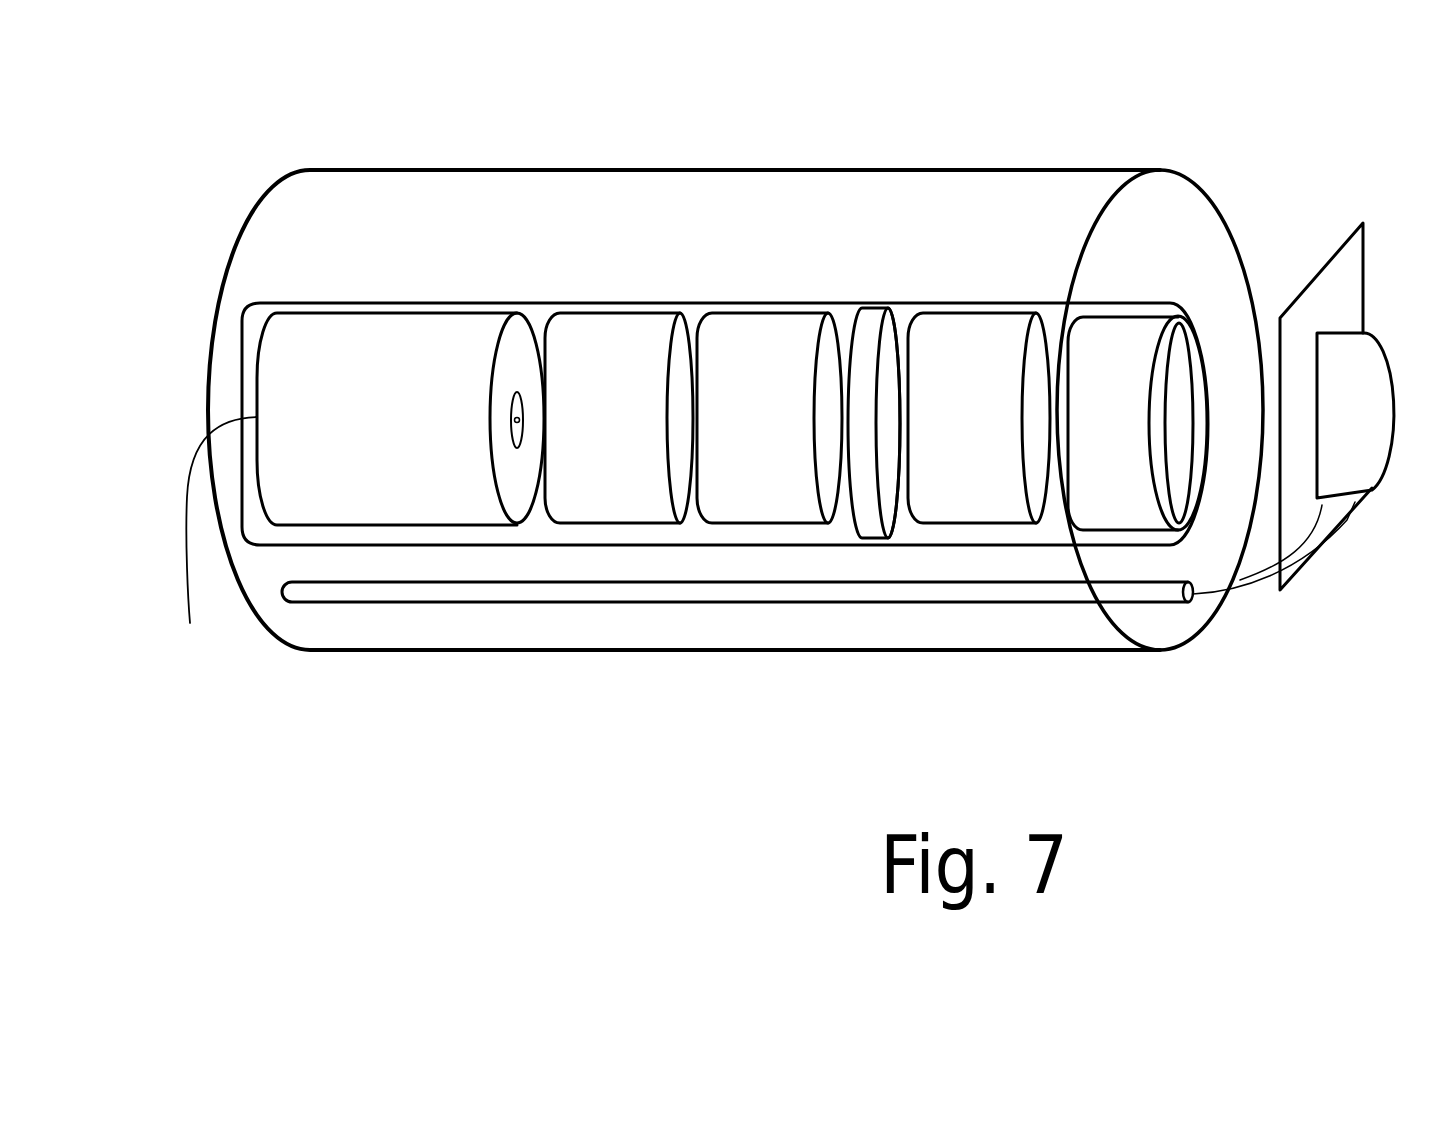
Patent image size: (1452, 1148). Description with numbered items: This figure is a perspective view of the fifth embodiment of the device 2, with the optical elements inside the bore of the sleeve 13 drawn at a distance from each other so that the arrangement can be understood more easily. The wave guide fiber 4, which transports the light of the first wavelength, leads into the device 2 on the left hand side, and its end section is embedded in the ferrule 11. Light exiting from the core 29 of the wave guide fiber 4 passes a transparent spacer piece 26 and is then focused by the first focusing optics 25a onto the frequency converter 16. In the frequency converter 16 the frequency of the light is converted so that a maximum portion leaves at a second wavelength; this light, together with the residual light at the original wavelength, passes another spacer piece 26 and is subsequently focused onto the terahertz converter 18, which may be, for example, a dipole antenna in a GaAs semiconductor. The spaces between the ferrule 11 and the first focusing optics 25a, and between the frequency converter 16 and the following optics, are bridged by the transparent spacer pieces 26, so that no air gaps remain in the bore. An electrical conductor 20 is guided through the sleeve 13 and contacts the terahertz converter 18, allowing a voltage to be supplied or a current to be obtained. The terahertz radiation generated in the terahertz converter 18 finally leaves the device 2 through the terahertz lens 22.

The device 2 is at (418, 140).
The sleeve 13 is at (608, 228).
The core 29 is at (517, 410).
The terahertz converter 18 is at (1328, 303).
The wave guide fiber 4 is at (193, 545).
The ferrule 11 is at (402, 480).
The transparent spacer piece 26 is at (609, 510).
The first focusing optics 25a is at (745, 510).
The frequency converter 16 is at (870, 517).
The electrical conductor 20 is at (1262, 580).
The terahertz lens 22 is at (1377, 465).